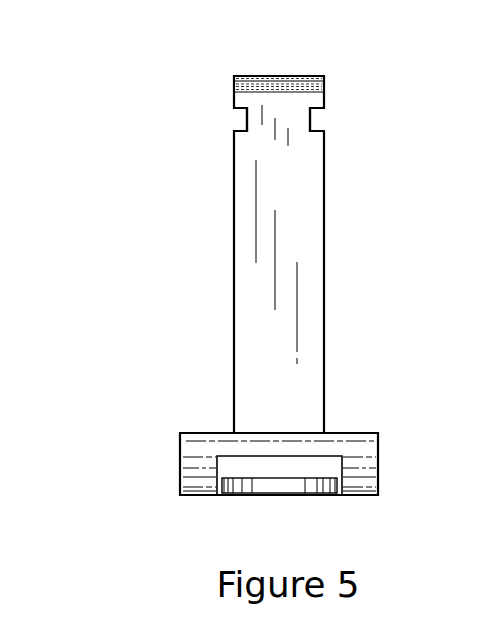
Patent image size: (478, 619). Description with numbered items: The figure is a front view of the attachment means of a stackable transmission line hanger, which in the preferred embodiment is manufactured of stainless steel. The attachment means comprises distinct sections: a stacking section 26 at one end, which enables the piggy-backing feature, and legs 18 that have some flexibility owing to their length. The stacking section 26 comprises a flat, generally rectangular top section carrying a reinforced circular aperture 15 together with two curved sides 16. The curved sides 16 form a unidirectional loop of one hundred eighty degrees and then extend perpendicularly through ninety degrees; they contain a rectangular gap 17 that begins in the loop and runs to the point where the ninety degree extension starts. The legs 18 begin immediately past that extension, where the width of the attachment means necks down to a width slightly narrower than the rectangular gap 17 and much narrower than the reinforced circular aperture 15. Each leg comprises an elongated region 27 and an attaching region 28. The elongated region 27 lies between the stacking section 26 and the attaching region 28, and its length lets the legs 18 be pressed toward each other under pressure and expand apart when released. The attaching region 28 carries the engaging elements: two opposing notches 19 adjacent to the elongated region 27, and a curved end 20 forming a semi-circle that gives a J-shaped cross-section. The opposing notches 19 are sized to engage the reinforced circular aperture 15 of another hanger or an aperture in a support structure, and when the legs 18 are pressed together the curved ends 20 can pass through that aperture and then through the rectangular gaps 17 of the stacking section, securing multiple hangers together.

The reinforced circular aperture 15 is at (297, 487).
The curved sides 16 is at (200, 470).
The rectangular gap 17 is at (323, 470).
The legs 18 is at (130, 73).
The opposing notches 19 is at (237, 116).
The curved end 20 is at (288, 90).
The stacking section 26 is at (127, 437).
The elongated region 27 is at (185, 140).
The attaching region 28 is at (217, 60).